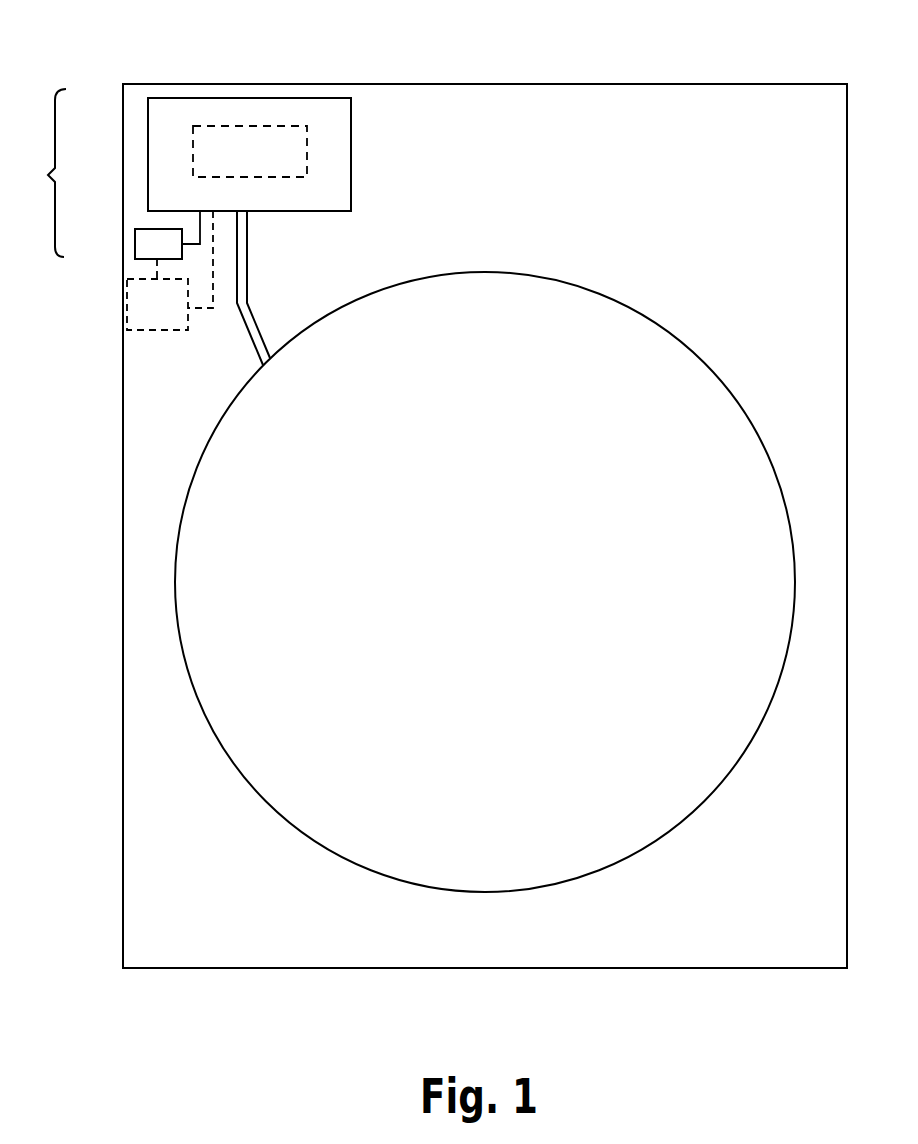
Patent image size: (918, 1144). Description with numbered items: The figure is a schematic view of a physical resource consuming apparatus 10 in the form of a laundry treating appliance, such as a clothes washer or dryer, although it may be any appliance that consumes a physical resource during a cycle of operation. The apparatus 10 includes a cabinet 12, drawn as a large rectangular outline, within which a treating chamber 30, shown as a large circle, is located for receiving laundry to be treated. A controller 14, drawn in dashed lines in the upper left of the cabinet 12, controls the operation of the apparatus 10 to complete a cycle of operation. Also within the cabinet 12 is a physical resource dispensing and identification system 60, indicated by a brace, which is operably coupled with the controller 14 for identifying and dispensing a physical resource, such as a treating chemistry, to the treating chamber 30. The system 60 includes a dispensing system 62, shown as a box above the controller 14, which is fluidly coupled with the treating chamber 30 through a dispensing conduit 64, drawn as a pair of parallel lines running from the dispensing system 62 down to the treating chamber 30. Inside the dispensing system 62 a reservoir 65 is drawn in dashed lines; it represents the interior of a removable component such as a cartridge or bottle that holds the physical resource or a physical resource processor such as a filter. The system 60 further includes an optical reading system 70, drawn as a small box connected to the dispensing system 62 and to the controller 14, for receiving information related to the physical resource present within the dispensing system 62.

The physical resource consuming apparatus 10 is at (873, 50).
The cabinet 12 is at (623, 83).
The controller 14 is at (148, 332).
The treating chamber 30 is at (476, 578).
The physical resource dispensing and identification system 60 is at (41, 173).
The dispensing system 62 is at (148, 137).
The dispensing conduit 64 is at (257, 347).
The reservoir 65 is at (265, 145).
The optical reading system 70 is at (135, 240).